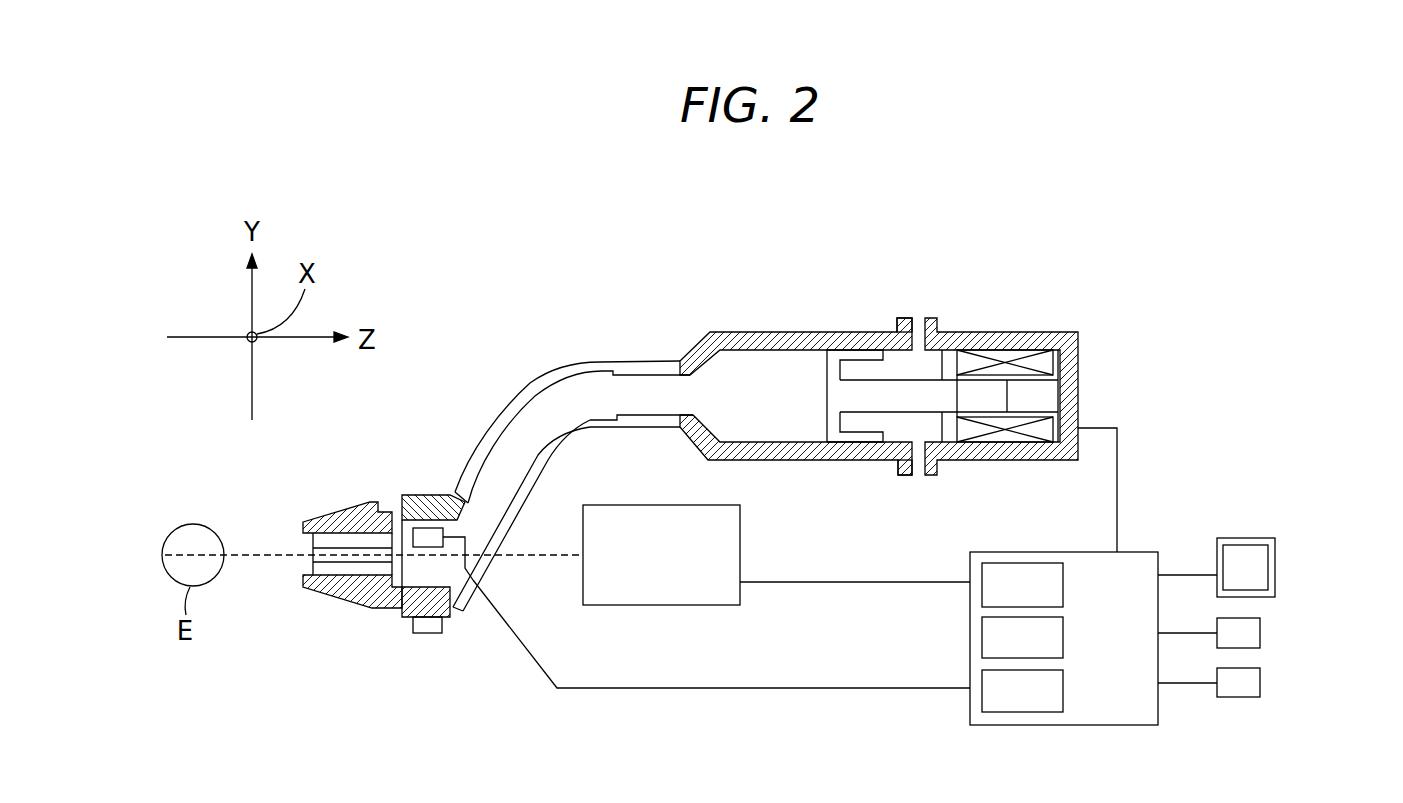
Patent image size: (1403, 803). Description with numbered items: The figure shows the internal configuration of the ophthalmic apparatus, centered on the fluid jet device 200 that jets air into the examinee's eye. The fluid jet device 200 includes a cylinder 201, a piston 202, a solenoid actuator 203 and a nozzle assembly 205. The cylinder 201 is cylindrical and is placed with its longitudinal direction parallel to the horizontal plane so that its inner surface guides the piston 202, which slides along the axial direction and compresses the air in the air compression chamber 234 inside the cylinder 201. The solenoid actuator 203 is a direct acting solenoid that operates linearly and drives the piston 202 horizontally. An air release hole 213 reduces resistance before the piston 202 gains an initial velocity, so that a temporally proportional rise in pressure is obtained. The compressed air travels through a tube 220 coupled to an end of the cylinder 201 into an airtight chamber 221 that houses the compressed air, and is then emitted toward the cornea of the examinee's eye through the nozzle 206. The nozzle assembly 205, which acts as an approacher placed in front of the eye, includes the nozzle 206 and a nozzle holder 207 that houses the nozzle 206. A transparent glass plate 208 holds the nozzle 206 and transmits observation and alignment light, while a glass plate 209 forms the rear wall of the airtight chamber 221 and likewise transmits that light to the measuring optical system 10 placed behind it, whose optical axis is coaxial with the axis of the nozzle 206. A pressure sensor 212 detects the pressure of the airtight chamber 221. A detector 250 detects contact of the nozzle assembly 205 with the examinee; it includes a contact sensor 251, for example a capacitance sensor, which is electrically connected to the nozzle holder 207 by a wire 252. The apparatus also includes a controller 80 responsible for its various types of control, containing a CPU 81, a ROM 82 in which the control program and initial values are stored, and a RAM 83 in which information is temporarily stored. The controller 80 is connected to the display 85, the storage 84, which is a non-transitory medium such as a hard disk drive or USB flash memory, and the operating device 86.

The fluid jet device 200 is at (671, 308).
The nozzle assembly 205 is at (292, 684).
The nozzle holder 207 is at (323, 522).
The glass plate 208 is at (313, 588).
The nozzle 206 is at (348, 547).
The pressure sensor 212 is at (428, 533).
The airtight chamber 221 is at (443, 570).
The glass plate 209 is at (483, 563).
The detector 250 is at (416, 706).
The wire 252 is at (392, 618).
The contact sensor 251 is at (430, 634).
The tube 220 is at (523, 383).
The air compression chamber 234 is at (750, 368).
The air release hole 213 is at (917, 322).
The solenoid actuator 203 is at (1010, 342).
The cylinder 201 is at (850, 368).
The piston 202 is at (833, 393).
The measuring optical system 10 is at (673, 585).
The controller 80 is at (1042, 550).
The CPU 81 is at (1063, 587).
The ROM 82 is at (1063, 639).
The RAM 83 is at (1063, 691).
The display 85 is at (1275, 565).
The storage 84 is at (1260, 633).
The operating device 86 is at (1260, 683).